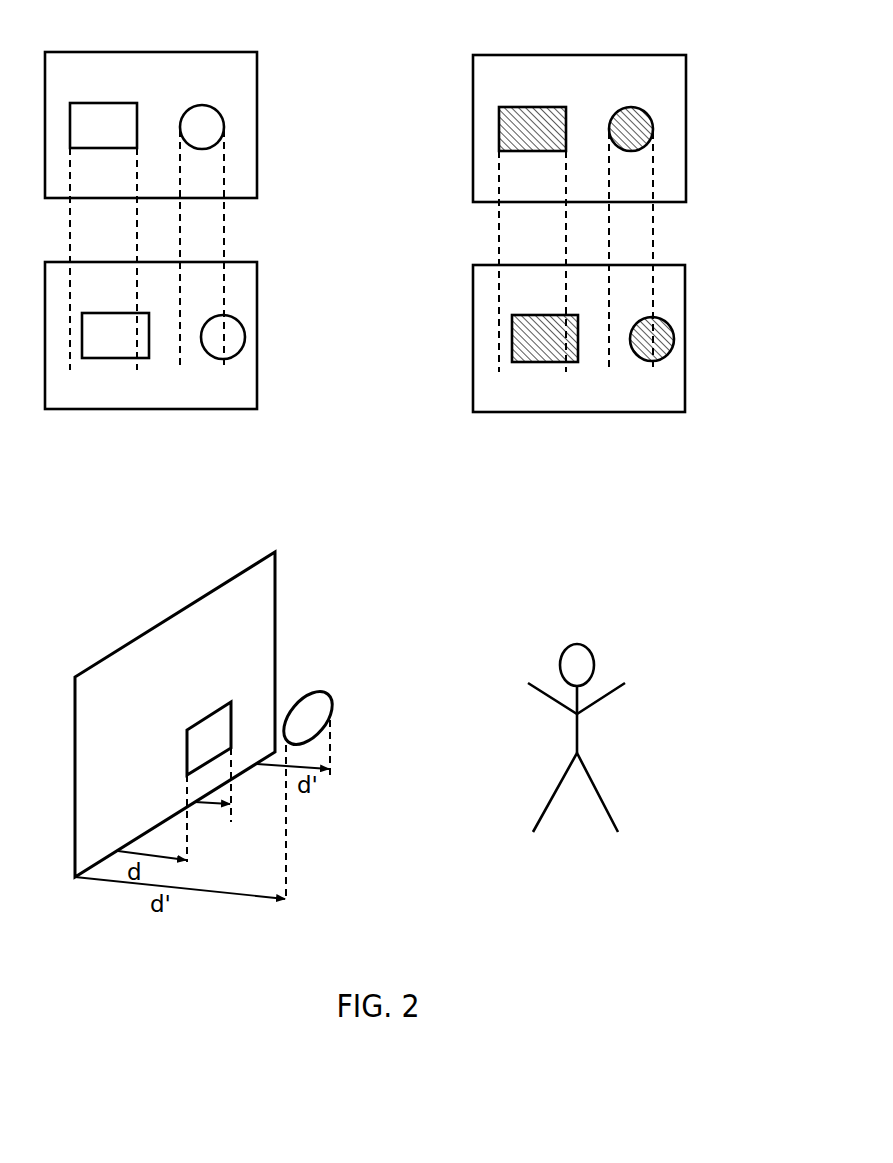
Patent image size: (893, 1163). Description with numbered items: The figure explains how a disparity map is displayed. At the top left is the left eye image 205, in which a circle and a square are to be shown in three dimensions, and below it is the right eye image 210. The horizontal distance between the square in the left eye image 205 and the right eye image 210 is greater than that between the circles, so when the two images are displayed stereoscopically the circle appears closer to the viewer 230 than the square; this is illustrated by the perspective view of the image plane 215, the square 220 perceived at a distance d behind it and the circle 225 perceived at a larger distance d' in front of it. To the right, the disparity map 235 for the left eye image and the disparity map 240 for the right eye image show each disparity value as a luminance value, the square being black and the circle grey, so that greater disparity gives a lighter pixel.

The left eye image 205 is at (257, 128).
The right eye image 210 is at (257, 337).
The display screen 215 is at (275, 583).
The rectangular object perceived behind screen 220 is at (233, 723).
The circular object perceived in front of screen 225 is at (330, 702).
The viewer 230 is at (594, 665).
The disparity map 235 is at (686, 130).
The disparity map 240 is at (685, 339).